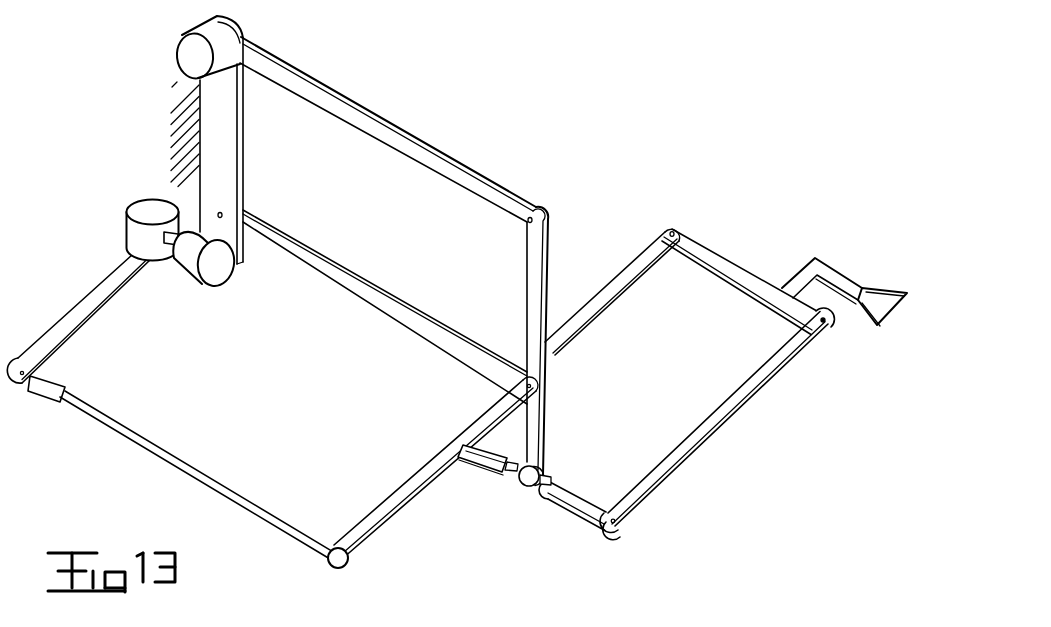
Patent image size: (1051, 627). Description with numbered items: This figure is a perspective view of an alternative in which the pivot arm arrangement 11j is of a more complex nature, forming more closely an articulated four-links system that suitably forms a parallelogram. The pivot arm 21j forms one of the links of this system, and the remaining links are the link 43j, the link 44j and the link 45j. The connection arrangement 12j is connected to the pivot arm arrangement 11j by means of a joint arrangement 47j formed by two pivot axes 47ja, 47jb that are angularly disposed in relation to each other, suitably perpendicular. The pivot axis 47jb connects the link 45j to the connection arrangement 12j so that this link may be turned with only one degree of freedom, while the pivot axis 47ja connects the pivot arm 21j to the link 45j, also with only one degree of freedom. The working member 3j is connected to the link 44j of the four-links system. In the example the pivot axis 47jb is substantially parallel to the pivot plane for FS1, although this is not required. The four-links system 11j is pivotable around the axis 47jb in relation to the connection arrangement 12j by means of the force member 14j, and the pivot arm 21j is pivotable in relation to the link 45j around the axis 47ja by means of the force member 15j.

The pivot arm arrangement 11j is at (595, 214).
The connection arrangement 12j is at (552, 404).
The force member 14j is at (187, 262).
The force member 15j is at (145, 215).
The pivot arm 21j is at (395, 508).
The working member 3j is at (878, 303).
The link 43j is at (717, 428).
The link 44j is at (737, 277).
The link 45j is at (581, 505).
The joint arrangement 47j is at (505, 524).
The pivot axis 47ja is at (466, 428).
The pivot axis 47jb is at (542, 478).
The pivot plane FS1 is at (318, 335).